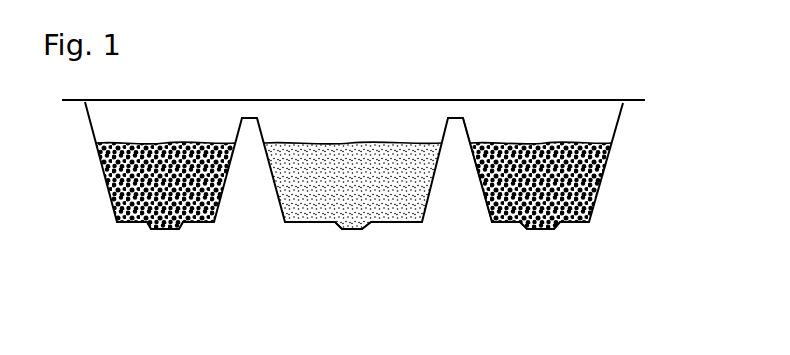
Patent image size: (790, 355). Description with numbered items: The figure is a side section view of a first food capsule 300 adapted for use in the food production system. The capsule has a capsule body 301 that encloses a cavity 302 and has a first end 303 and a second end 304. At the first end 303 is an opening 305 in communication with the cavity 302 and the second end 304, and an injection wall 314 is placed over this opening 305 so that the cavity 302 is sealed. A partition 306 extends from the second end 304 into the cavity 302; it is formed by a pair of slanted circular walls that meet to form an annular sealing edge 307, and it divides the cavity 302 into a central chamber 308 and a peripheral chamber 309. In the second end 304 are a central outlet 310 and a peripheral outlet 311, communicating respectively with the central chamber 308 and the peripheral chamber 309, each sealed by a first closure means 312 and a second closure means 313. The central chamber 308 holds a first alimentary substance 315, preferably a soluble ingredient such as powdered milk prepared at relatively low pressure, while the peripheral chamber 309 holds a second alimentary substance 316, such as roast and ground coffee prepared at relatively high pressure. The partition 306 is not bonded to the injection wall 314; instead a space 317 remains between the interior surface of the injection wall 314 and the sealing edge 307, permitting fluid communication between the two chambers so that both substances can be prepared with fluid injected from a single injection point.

The first food capsule 300 is at (358, 78).
The capsule body 301 is at (625, 126).
The cavity 302 is at (333, 110).
The first end 303 is at (462, 100).
The second end 304 is at (383, 228).
The opening 305 is at (247, 102).
The partition 306 is at (486, 208).
The annular sealing edge 307 is at (458, 113).
The central chamber 308 is at (298, 210).
The peripheral chamber 309 is at (135, 203).
The central outlet 310 is at (357, 235).
The peripheral outlet 311 is at (172, 236).
The first closure means 312 is at (350, 236).
The second closure means 313 is at (160, 236).
The injection wall 314 is at (420, 100).
The first alimentary substance 315 is at (355, 145).
The second alimentary substance 316 is at (111, 180).
The space 317 is at (243, 108).